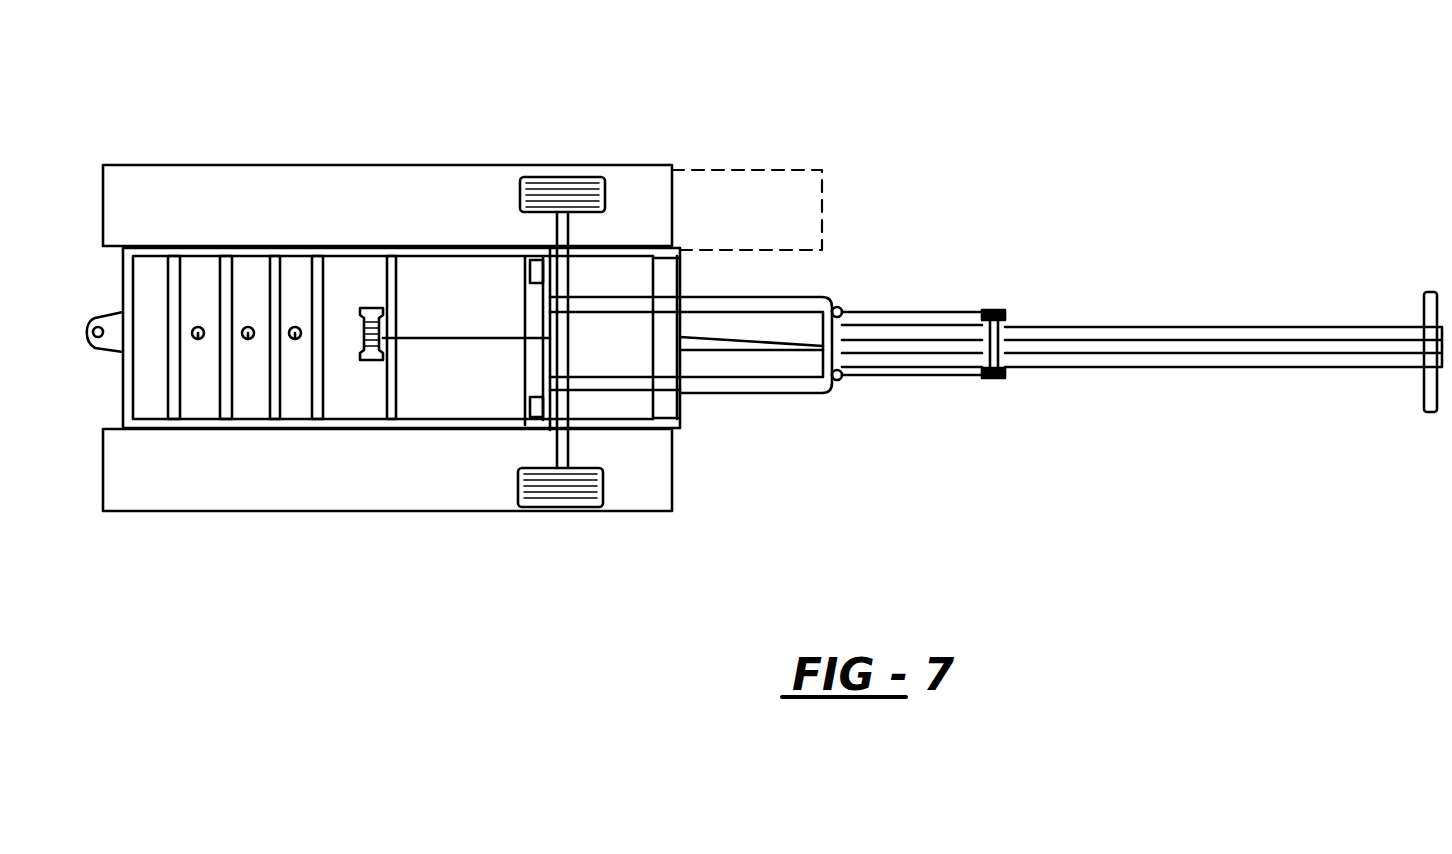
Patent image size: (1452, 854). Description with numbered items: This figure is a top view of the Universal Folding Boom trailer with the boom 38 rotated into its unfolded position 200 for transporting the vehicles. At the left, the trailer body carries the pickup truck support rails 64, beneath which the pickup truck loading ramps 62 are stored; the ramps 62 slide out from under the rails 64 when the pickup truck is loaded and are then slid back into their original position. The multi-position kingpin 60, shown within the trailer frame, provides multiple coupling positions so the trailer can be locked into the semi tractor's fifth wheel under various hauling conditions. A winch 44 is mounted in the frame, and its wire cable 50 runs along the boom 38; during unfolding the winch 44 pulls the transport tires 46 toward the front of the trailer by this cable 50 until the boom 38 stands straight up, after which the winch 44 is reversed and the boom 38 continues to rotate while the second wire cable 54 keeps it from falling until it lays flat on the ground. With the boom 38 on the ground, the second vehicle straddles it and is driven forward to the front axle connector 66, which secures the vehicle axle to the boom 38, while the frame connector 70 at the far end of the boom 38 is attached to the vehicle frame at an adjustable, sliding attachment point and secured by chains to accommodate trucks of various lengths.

The pickup truck support rails 64 is at (123, 165).
The multi-position kingpin 60 is at (198, 340).
The winch 44 is at (373, 310).
The wire cable 50 is at (512, 340).
The transport tires 46 is at (566, 177).
The wire cable 54 is at (633, 337).
The pickup truck loading ramps 62 is at (787, 168).
The unfolded position 200 is at (967, 114).
The boom 38 is at (1140, 327).
The front axle connector 66 is at (993, 380).
The frame connector 70 is at (1424, 317).